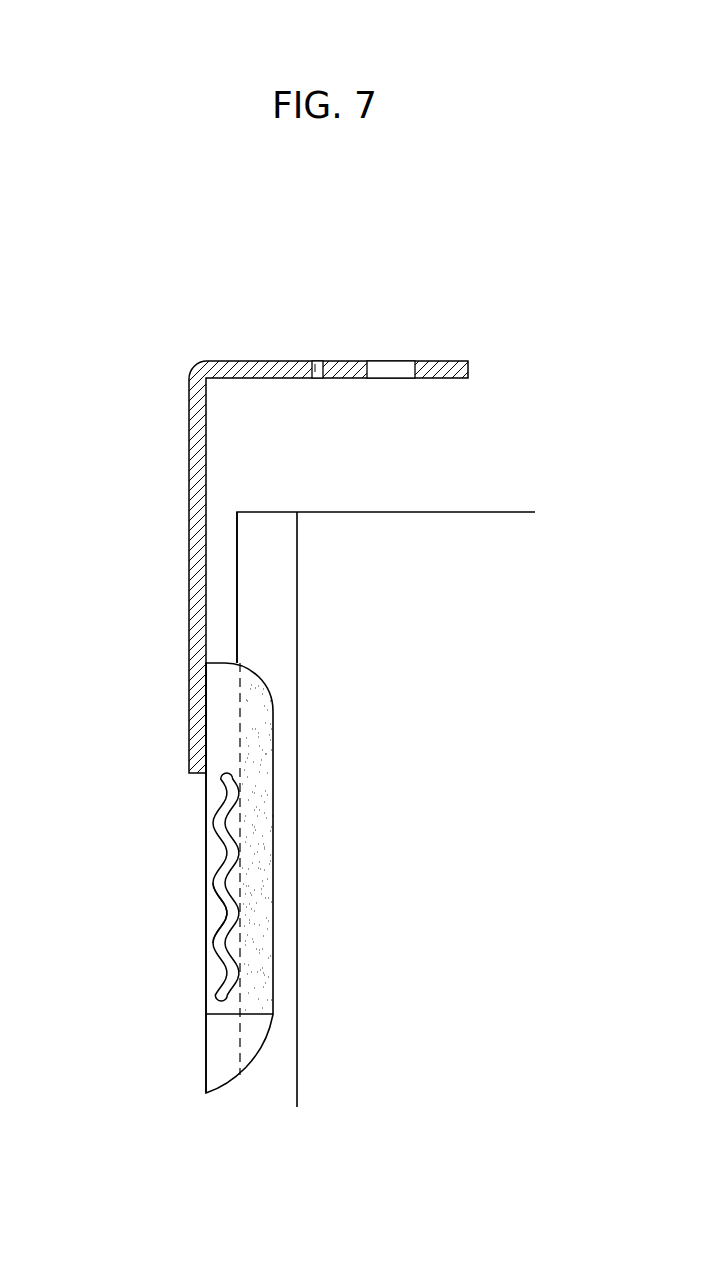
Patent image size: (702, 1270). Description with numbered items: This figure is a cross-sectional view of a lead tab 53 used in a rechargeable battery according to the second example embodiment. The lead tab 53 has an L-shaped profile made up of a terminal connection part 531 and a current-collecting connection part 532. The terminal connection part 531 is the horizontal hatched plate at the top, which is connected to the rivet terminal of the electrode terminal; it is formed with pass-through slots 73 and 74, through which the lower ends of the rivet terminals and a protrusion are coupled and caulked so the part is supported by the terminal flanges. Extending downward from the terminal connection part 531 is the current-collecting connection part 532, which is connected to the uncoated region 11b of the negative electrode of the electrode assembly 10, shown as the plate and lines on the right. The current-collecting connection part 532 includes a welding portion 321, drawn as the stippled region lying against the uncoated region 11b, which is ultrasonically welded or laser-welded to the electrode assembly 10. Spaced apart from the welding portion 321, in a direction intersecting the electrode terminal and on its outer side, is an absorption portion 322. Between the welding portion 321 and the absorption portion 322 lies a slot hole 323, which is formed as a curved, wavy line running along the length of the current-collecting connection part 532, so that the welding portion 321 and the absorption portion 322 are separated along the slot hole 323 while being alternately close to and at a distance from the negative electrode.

The lead tab 53 is at (328, 490).
The terminal connection part 531 is at (263, 360).
The pass-through slot 74 is at (316, 372).
The pass-through slot 73 is at (389, 372).
The electrode assembly 10 is at (477, 537).
The uncoated region 11b is at (272, 593).
The current-collecting connection part 532 is at (227, 878).
The welding portion 321 is at (262, 762).
The absorption portion 322 is at (218, 853).
The slot hole 323 is at (228, 895).